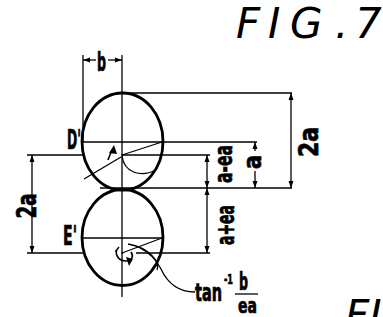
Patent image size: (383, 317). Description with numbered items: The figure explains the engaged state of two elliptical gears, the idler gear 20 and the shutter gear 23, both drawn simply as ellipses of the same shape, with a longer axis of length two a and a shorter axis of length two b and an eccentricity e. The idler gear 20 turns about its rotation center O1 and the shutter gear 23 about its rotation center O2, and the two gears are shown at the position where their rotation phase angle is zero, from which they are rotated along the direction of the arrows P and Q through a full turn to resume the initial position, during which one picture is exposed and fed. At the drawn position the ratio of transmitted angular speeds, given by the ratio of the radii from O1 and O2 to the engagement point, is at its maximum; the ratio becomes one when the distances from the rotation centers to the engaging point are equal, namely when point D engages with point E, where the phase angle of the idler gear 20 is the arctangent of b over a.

The idler gear 20 is at (91, 264).
The shutter gear 23 is at (142, 93).
The rotation center of the idler gear O1 is at (120, 266).
The rotation center of the shutter gear O2 is at (154, 172).
The point D on the shutter gear D is at (164, 141).
The point E on the idler gear E is at (163, 240).
The arrow P is at (115, 251).
The arrow Q is at (95, 175).